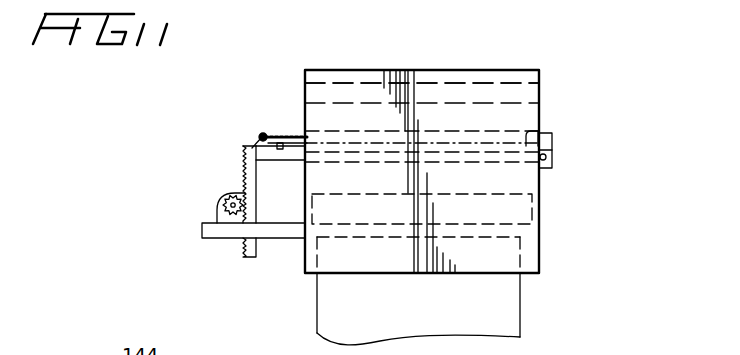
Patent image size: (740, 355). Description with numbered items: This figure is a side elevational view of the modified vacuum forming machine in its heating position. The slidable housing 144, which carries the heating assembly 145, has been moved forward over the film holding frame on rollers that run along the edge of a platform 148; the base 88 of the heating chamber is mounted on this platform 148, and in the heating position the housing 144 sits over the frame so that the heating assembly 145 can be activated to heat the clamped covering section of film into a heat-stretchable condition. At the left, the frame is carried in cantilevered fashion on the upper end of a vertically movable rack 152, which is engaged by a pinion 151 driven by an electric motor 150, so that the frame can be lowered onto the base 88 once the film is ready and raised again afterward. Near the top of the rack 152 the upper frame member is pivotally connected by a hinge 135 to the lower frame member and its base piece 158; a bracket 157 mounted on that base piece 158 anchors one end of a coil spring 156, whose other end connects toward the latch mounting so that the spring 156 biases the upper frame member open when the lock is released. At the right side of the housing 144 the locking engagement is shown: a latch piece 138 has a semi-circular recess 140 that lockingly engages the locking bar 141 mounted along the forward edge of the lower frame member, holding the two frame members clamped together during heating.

The slidable housing 144 is at (482, 69).
The heating assembly 145 is at (522, 98).
The latch piece 138 is at (546, 133).
The semi-circular recess 140 is at (553, 143).
The locking bar 141 is at (546, 170).
The base 88 is at (548, 213).
The coil spring 156 is at (287, 139).
The bracket 157 is at (260, 135).
The base piece 158 is at (261, 144).
The rack 152 is at (245, 176).
The pinion 151 is at (226, 200).
The electric motor 150 is at (218, 209).
The hinge 135 is at (278, 150).
The platform 148 is at (288, 229).